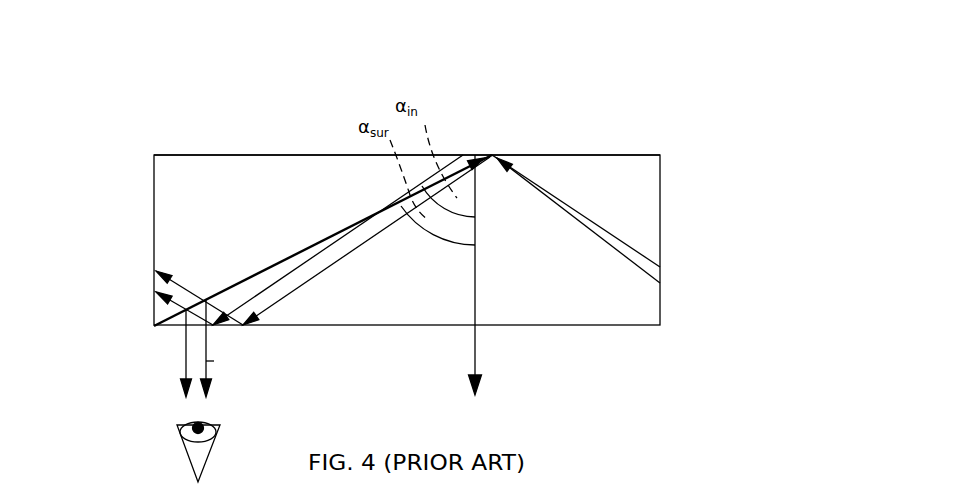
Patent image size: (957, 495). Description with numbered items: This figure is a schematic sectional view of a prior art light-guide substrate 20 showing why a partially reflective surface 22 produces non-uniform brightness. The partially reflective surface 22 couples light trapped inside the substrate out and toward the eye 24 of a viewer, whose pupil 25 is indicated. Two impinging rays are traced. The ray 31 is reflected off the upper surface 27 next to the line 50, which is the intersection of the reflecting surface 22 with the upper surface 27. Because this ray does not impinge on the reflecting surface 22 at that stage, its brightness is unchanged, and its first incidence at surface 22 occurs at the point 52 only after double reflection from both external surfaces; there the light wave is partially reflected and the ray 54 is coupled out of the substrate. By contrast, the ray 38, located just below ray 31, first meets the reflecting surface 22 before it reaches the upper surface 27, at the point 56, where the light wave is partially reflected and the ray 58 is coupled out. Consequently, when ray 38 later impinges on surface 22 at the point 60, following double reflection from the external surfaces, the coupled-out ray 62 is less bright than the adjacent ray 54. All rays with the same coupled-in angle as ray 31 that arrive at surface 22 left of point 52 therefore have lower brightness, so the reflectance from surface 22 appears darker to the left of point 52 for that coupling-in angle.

The light guide 20 is at (615, 167).
The partially reflective surface 22 is at (302, 250).
The eye 24 is at (210, 452).
The pupil 25 is at (190, 420).
The upper surface 27 is at (572, 155).
The ray 31 is at (645, 256).
The ray 38 is at (652, 282).
The line 50 is at (490, 155).
The point 52 is at (205, 298).
The ray 54 is at (214, 361).
The point 56 is at (478, 155).
The ray 58 is at (477, 341).
The point 60 is at (178, 308).
The output light ray 62 is at (180, 343).